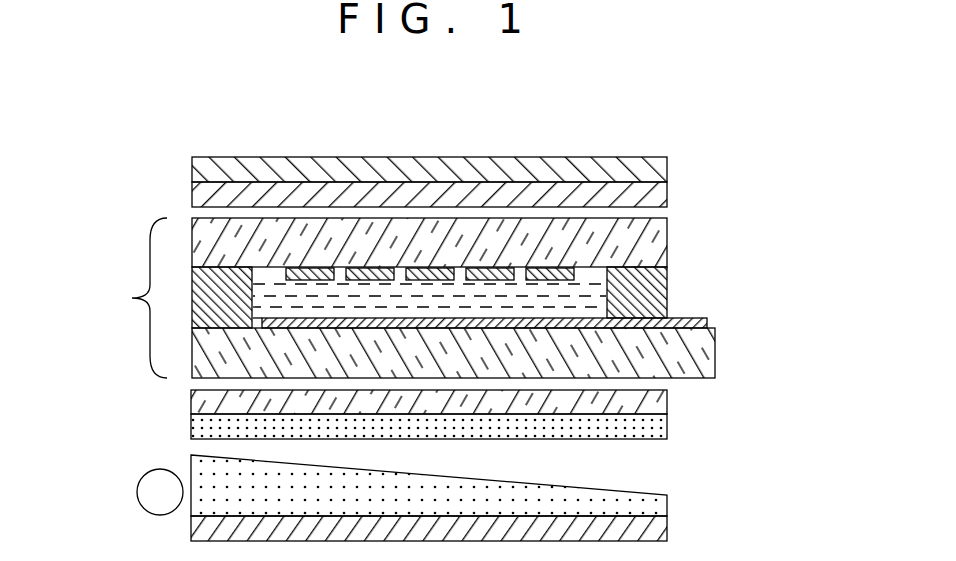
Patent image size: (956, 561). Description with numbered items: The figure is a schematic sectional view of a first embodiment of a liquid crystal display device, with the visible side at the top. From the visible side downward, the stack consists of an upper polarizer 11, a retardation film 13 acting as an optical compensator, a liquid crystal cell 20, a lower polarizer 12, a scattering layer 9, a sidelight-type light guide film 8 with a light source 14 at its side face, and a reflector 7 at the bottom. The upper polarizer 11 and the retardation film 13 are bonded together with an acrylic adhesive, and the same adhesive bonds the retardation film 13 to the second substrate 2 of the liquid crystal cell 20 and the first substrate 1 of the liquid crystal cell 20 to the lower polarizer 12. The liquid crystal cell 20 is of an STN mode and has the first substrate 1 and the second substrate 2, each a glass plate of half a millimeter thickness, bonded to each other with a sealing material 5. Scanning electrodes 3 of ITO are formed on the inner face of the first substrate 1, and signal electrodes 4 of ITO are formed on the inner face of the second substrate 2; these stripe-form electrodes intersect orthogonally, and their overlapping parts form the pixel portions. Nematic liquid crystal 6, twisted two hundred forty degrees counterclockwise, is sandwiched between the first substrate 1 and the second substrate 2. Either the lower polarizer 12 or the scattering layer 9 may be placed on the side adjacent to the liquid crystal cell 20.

The first substrate 1 is at (710, 365).
The second substrate 2 is at (660, 240).
The scanning electrodes 3 is at (707, 325).
The signal electrodes 4 is at (432, 268).
The sealing material 5 is at (660, 295).
The nematic liquid crystal 6 is at (267, 291).
The reflector 7 is at (660, 530).
The light guide film 8 is at (660, 508).
The scattering layer 9 is at (660, 430).
The upper polarizer 11 is at (667, 170).
The lower polarizer 12 is at (660, 404).
The retardation film 13 is at (667, 197).
The light source 14 is at (152, 494).
The liquid crystal cell 20 is at (87, 313).